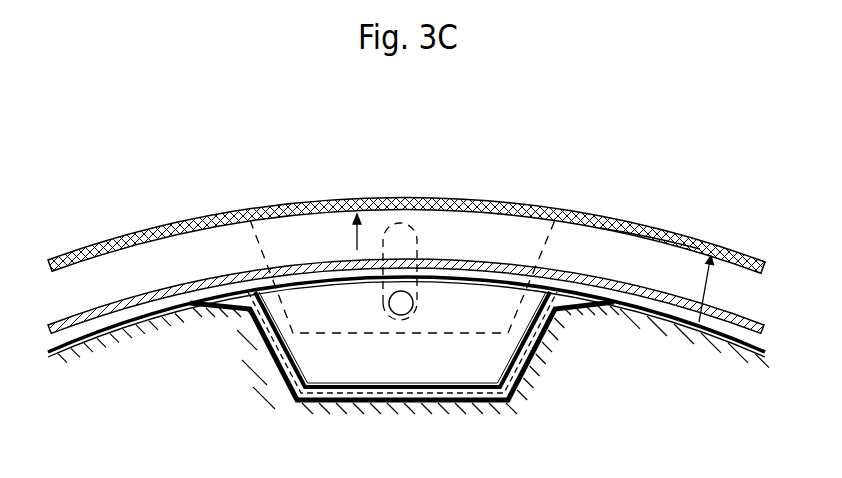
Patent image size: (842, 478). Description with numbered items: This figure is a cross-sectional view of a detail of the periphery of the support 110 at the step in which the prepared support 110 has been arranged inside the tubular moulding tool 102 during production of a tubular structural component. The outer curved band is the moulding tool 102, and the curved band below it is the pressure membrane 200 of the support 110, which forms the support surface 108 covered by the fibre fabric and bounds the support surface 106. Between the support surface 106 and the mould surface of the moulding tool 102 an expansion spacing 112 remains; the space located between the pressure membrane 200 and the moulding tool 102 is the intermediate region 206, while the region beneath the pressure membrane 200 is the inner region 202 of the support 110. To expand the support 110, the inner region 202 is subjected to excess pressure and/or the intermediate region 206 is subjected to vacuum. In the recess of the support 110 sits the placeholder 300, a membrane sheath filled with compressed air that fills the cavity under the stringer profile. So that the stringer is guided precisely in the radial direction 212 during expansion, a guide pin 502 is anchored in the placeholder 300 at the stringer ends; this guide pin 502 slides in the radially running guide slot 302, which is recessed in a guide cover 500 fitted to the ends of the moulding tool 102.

The tubular moulding tool 102 is at (615, 216).
The support surface 106 is at (645, 238).
The support surface 108 is at (649, 312).
The support 110 is at (209, 361).
The expansion spacing 112 is at (709, 285).
The pressure membrane 200 is at (90, 337).
The inner region 202 is at (766, 357).
The intermediate region 206 is at (147, 257).
The radial direction 212 is at (355, 243).
The placeholder 300 is at (333, 287).
The guide slot 302 is at (398, 222).
The guide cover 500 is at (547, 232).
The guide pin 502 is at (418, 303).